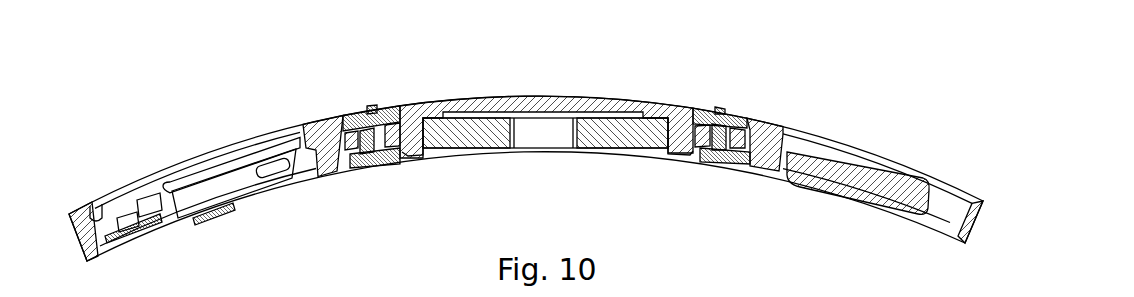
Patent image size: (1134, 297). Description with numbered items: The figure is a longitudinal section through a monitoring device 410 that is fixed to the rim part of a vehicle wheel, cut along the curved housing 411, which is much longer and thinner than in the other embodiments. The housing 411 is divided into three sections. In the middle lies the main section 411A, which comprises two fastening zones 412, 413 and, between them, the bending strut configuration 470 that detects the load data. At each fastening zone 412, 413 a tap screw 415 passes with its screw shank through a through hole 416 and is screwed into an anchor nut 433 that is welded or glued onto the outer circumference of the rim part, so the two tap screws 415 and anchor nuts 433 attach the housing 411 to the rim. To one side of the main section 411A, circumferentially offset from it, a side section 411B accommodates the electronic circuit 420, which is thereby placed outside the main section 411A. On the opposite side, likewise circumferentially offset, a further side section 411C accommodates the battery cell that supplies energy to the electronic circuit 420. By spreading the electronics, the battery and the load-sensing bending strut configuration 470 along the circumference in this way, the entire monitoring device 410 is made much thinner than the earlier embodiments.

The monitoring device 410 is at (161, 117).
The housing 411 is at (818, 100).
The main section 411A is at (455, 104).
The side section 411B is at (320, 138).
The side section 411C is at (862, 152).
The fastening zone 412 is at (415, 143).
The fastening zone 413 is at (673, 150).
The tap screw 415 is at (366, 110).
The through hole 416 is at (355, 142).
The electronic circuit 420 is at (183, 218).
The anchor nut 433 is at (362, 166).
The bending strut configuration 470 is at (608, 160).